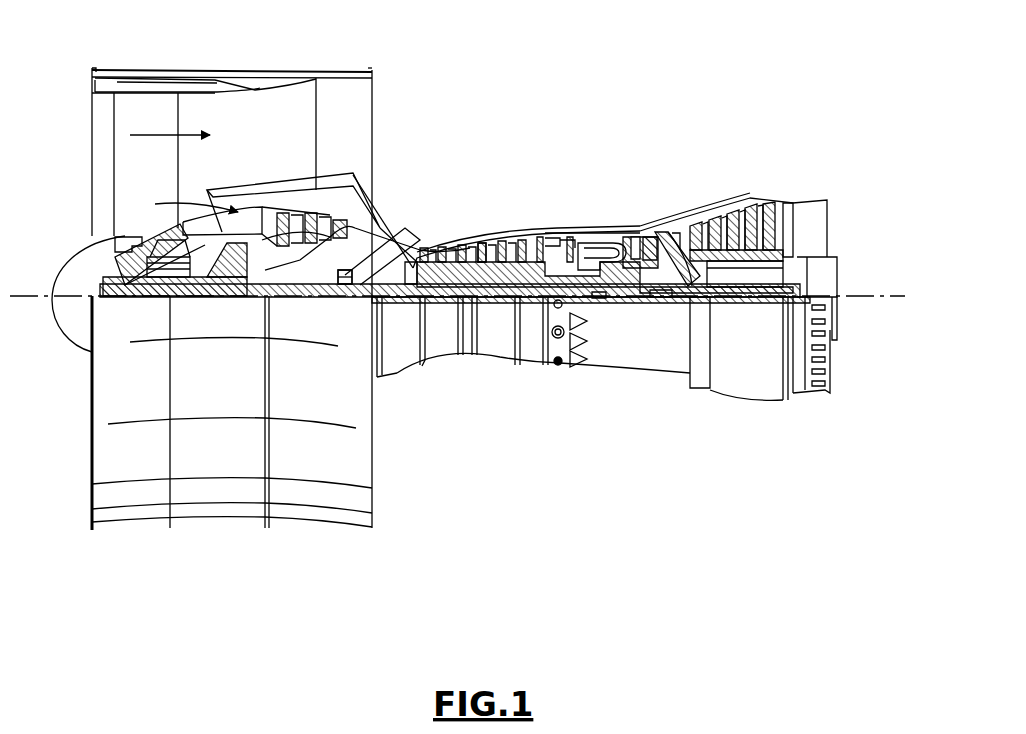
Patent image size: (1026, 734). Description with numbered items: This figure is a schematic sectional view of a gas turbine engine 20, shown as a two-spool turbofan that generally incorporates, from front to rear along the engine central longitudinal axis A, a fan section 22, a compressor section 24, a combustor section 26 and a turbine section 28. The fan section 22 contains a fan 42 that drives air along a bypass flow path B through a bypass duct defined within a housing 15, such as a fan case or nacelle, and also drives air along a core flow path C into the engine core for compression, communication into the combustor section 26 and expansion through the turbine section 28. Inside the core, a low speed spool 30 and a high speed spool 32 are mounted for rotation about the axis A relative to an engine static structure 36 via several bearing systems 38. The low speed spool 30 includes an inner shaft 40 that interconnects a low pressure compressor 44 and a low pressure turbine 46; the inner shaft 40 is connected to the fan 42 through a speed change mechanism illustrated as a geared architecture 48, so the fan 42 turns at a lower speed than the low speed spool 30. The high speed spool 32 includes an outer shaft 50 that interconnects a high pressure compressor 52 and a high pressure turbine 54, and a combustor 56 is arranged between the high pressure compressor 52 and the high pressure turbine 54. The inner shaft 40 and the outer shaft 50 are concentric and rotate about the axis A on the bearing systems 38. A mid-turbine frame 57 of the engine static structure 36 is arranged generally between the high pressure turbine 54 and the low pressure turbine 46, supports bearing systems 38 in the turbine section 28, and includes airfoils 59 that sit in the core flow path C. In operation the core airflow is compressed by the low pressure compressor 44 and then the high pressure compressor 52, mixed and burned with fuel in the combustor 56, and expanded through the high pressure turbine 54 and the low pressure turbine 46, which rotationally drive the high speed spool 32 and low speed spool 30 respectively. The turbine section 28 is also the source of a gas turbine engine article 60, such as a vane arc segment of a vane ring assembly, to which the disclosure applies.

The gas turbine engine 20 is at (598, 118).
The fan section 22 is at (182, 68).
The housing 15 is at (234, 80).
The fan 42 is at (149, 159).
The low pressure compressor 44 is at (323, 225).
The compressor section 24 is at (414, 220).
The combustor section 26 is at (590, 222).
The turbine section 28 is at (718, 175).
The low speed spool 30 is at (500, 300).
The high speed spool 32 is at (535, 246).
The engine static structure 36 is at (532, 365).
The bearing systems 38 is at (344, 290).
The inner shaft 40 is at (381, 320).
The low pressure turbine 46 is at (742, 206).
The geared architecture 48 is at (238, 290).
The outer shaft 50 is at (600, 298).
The high pressure compressor 52 is at (480, 245).
The high pressure turbine 54 is at (646, 256).
The combustor 56 is at (590, 250).
The mid-turbine frame 57 is at (679, 226).
The airfoils 59 is at (702, 268).
The gas turbine engine article 60 is at (660, 262).
The engine central longitudinal axis A is at (905, 296).
The bypass flow path B is at (156, 134).
The core flow path C is at (187, 205).